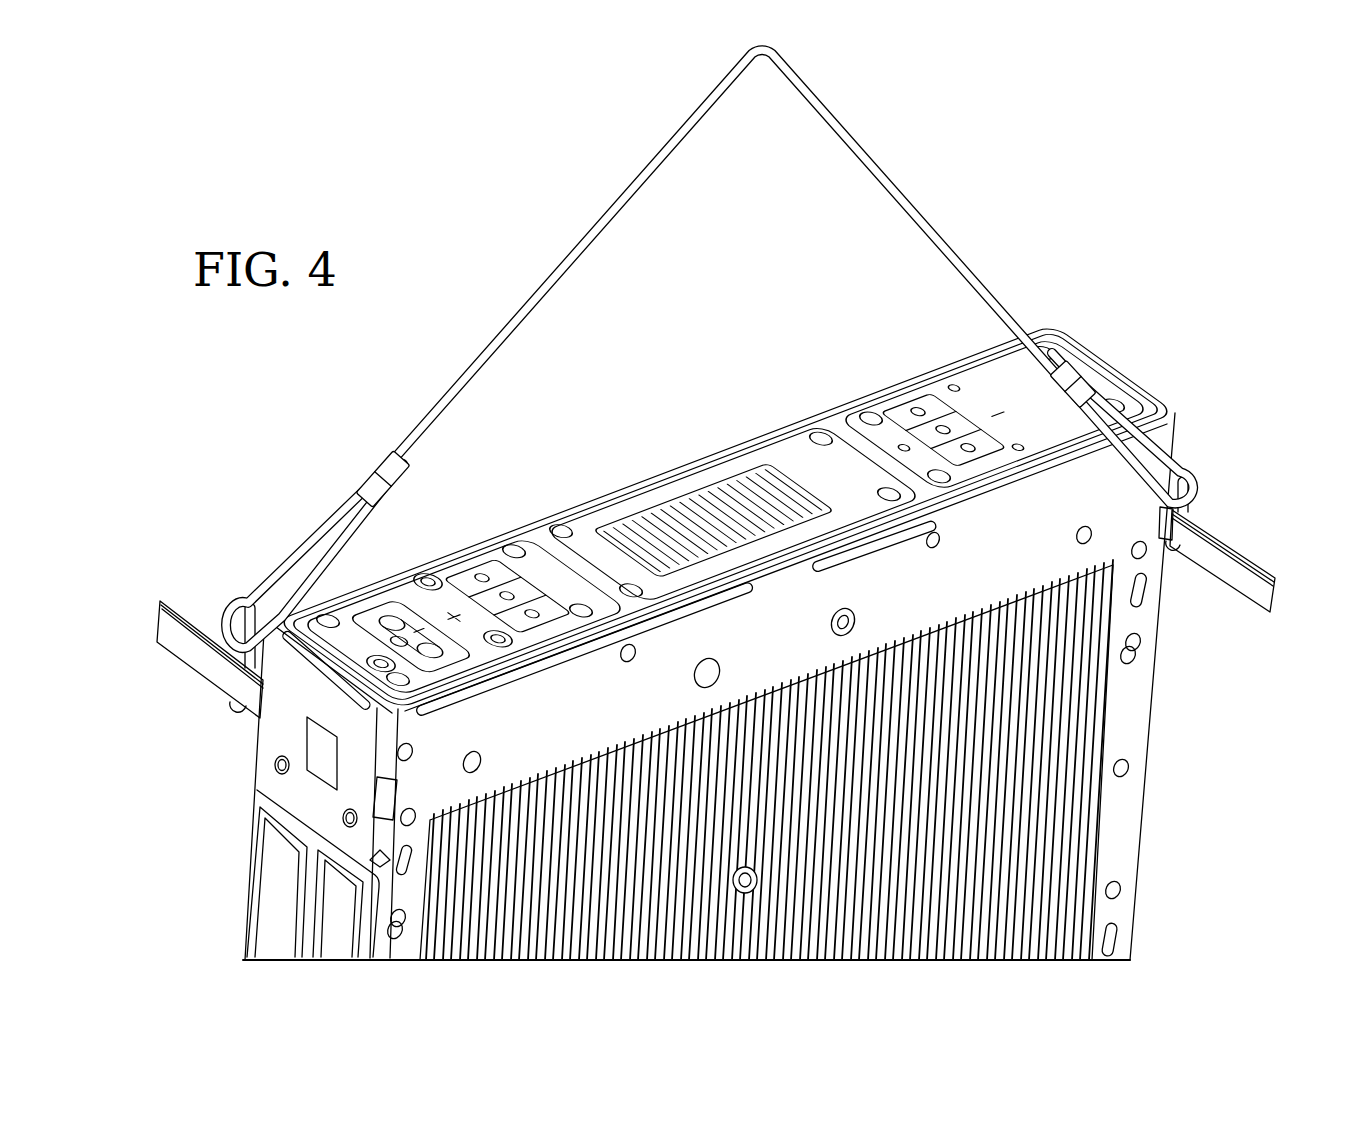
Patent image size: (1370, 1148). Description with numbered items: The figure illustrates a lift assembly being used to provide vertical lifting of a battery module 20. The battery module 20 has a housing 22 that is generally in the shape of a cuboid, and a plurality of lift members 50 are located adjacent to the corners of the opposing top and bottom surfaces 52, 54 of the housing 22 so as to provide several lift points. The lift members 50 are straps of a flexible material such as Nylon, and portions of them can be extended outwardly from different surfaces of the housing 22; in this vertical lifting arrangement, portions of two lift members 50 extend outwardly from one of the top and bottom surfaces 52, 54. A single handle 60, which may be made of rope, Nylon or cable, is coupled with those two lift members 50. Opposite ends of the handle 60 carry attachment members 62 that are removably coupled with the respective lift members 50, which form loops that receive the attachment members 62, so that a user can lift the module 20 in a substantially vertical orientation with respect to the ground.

The battery module 20 is at (761, 642).
The housing 22 is at (1073, 695).
The lift member 50 is at (178, 635).
The top surface 52 is at (1056, 352).
The bottom surface 54 is at (1015, 780).
The handle 60 is at (585, 228).
The attachment member 62 is at (247, 650).